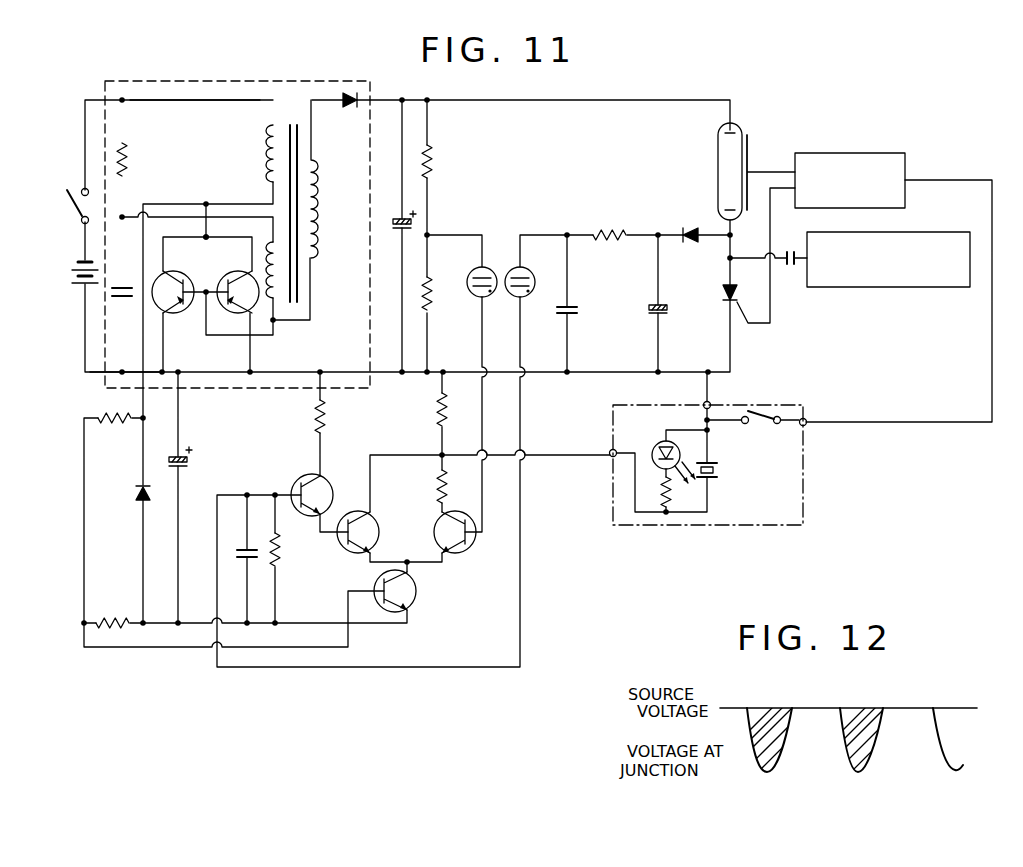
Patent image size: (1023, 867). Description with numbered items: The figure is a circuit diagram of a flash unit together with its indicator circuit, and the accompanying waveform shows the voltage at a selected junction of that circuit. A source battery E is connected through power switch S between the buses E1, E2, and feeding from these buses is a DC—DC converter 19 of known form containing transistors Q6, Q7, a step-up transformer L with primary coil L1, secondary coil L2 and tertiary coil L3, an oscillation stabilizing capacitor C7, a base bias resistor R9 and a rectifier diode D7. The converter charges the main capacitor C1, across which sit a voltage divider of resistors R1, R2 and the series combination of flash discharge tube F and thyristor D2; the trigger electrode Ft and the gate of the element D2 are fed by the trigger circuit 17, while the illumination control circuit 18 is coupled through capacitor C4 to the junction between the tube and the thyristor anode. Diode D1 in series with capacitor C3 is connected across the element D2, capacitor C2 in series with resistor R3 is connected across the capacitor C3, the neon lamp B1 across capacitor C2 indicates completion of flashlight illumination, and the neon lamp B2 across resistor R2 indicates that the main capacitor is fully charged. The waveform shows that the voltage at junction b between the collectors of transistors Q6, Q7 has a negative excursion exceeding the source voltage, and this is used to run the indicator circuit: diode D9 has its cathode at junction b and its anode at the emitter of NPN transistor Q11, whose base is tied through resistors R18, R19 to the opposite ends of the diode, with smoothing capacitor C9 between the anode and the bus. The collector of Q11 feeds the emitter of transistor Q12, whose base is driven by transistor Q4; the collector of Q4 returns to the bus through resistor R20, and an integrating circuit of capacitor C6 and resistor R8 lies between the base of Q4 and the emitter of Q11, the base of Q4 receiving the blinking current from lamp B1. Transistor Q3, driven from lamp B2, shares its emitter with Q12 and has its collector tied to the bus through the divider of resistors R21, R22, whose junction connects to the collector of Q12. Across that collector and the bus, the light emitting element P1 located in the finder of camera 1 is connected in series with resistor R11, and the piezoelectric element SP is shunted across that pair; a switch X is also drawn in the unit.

In FIG. 11, the DC—DC converter 19 is at (225, 81).
In FIG. 11, the bus E2 is at (206, 101).
In FIG. 11, the bus E1 is at (87, 372).
In FIG. 11, the power switch S is at (72, 206).
In FIG. 11, the source battery E is at (77, 271).
In FIG. 11, the oscillation stabilizing capacitor C7 is at (112, 292).
In FIG. 11, the base bias resistor R9 is at (127, 160).
In FIG. 11, the tertiary coil L3 is at (266, 160).
In FIG. 11, the primary coil L1 is at (282, 318).
In FIG. 11, the secondary coil L2 is at (318, 240).
In FIG. 11, the step-up transformer L is at (294, 121).
In FIG. 11, the rectifier diode D7 is at (350, 106).
In FIG. 11, the junction b is at (203, 240).
In FIG. 12, the junction b is at (765, 757).
In FIG. 11, the transistor Q6 is at (180, 312).
In FIG. 11, the transistor Q7 is at (240, 271).
In FIG. 11, the main capacitor C1 is at (393, 224).
In FIG. 11, the resistor R1 is at (432, 162).
In FIG. 11, the resistor R2 is at (432, 296).
In FIG. 11, the neon lamp B2 is at (472, 272).
In FIG. 11, the neon lamp B1 is at (528, 270).
In FIG. 11, the capacitor C2 is at (557, 310).
In FIG. 11, the resistor R3 is at (608, 233).
In FIG. 11, the diode D1 is at (689, 232).
In FIG. 11, the capacitor C3 is at (650, 309).
In FIG. 11, the flash discharge tube F is at (718, 168).
In FIG. 11, the trigger electrode Ft is at (749, 148).
In FIG. 11, the main switching element D2 is at (723, 292).
In FIG. 11, the capacitor C4 is at (792, 264).
In FIG. 11, the trigger circuit 17 is at (849, 153).
In FIG. 11, the illumination control circuit 18 is at (878, 288).
In FIG. 11, the resistor R18 is at (116, 422).
In FIG. 11, the diode D9 is at (136, 490).
In FIG. 11, the smoothing capacitor C9 is at (187, 464).
In FIG. 11, the resistor R19 is at (116, 618).
In FIG. 11, the capacitor C6 is at (240, 553).
In FIG. 11, the resistor R8 is at (280, 555).
In FIG. 11, the resistor R20 is at (316, 418).
In FIG. 11, the resistor R21 is at (438, 416).
In FIG. 11, the resistor R22 is at (438, 488).
In FIG. 11, the transistor Q4 is at (292, 484).
In FIG. 11, the transistor Q12 is at (350, 551).
In FIG. 11, the transistor Q3 is at (466, 551).
In FIG. 11, the NPN transistor Q11 is at (416, 592).
In FIG. 11, the camera 1 is at (732, 527).
In FIG. 11, the light emitting element P1 is at (655, 447).
In FIG. 11, the resistor R11 is at (664, 516).
In FIG. 11, the piezoelectric element SP is at (717, 470).
In FIG. 11, the synchro switch X is at (762, 421).